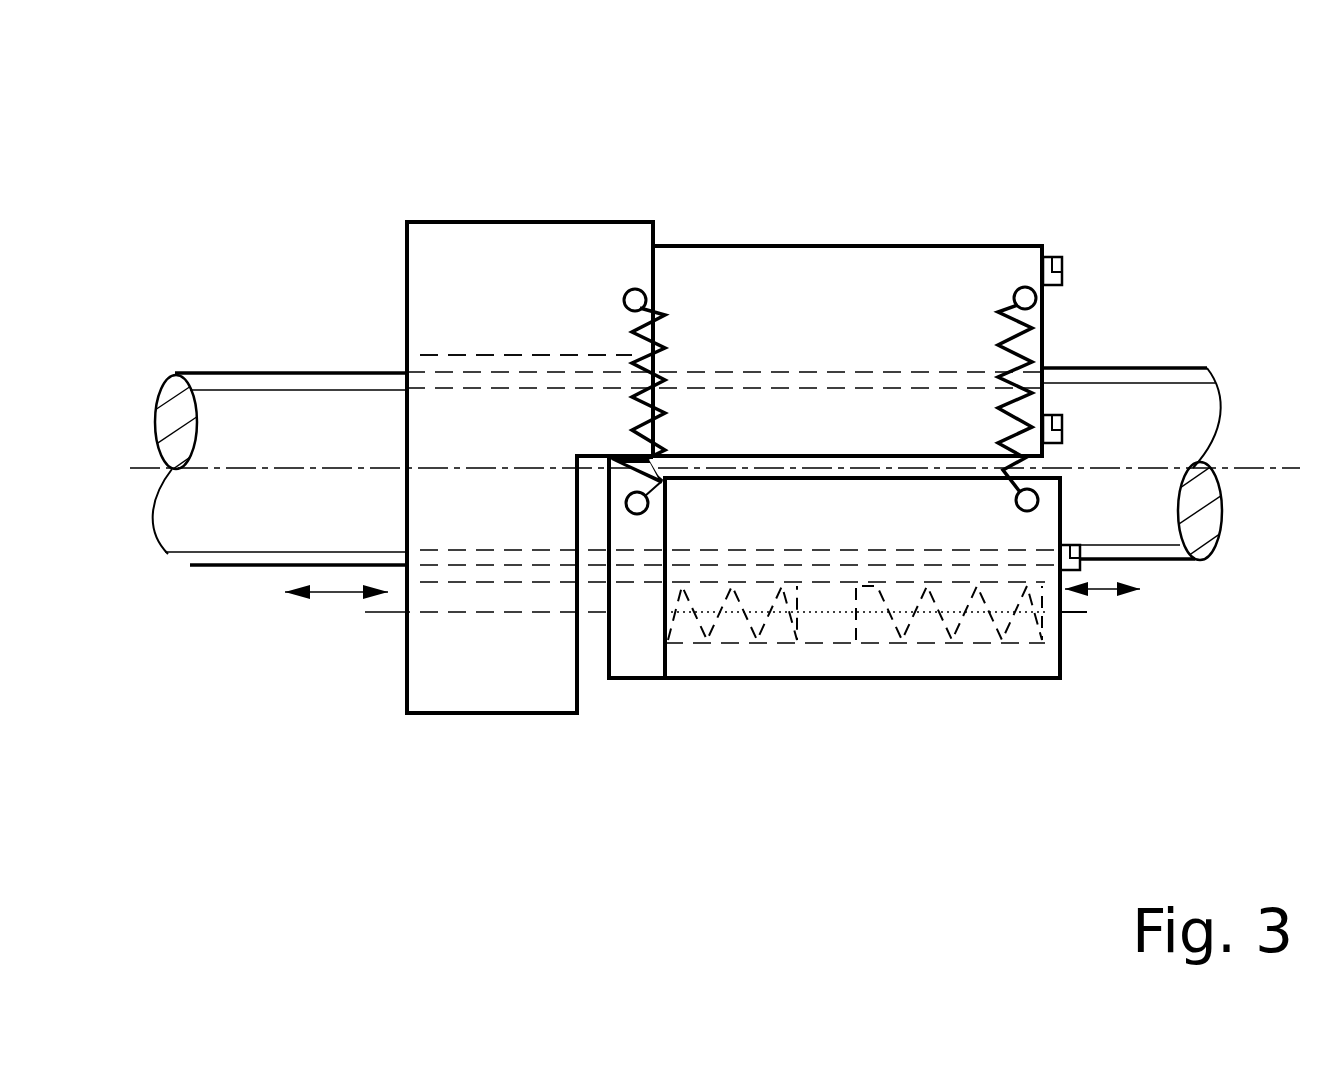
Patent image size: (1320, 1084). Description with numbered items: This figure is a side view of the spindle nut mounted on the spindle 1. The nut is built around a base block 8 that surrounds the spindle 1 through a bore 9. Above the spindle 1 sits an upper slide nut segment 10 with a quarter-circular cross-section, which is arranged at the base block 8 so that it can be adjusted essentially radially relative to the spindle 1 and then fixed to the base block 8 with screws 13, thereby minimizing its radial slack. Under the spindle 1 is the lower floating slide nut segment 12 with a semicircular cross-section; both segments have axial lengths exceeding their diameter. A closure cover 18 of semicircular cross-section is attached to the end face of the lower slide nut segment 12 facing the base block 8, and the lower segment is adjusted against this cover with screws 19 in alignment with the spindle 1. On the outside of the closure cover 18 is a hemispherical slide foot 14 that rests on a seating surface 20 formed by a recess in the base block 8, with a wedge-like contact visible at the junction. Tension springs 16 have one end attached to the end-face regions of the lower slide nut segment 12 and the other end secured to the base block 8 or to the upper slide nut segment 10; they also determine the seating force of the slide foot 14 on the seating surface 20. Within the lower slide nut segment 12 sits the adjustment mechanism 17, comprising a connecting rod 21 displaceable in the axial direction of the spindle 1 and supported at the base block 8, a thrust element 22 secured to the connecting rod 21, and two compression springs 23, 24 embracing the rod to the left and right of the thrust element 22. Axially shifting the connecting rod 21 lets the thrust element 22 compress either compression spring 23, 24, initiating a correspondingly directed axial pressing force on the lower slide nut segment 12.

The spindle 1 is at (218, 385).
The base block 8 is at (421, 272).
The bore 9 is at (423, 358).
The upper slide nut segment 10 is at (797, 325).
The lower floating slide nut segment 12 is at (1040, 525).
The screws 13 is at (1057, 415).
The slide foot 14 is at (612, 468).
The tension springs 16 is at (655, 310).
The adjustment mechanism 17 is at (908, 645).
The closure cover 18 is at (653, 603).
The screws 19 is at (1080, 568).
The seating surface 20 is at (585, 455).
The connecting rod 21 is at (1073, 612).
The thrust element 22 is at (828, 630).
The compression spring 23 is at (766, 640).
The compression spring 24 is at (990, 637).